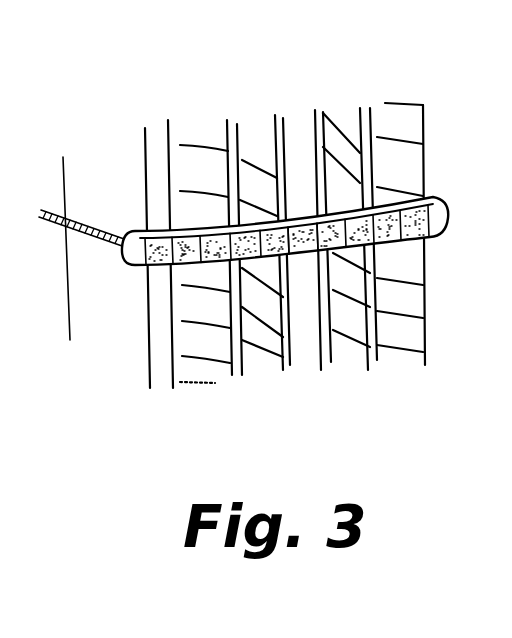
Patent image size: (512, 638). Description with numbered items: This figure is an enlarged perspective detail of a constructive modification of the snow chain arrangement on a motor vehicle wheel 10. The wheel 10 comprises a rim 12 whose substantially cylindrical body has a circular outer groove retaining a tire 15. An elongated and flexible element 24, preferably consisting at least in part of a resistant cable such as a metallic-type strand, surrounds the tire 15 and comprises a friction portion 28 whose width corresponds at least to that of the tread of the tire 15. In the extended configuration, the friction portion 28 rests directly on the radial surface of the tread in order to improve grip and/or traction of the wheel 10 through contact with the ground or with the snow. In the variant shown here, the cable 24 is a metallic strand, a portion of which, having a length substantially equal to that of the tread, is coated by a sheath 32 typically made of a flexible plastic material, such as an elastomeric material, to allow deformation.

The motor vehicle wheel 10 is at (439, 282).
The rim 12 is at (76, 311).
The tire 15 is at (253, 193).
The elongated and flexible element 24 is at (93, 222).
The friction portion 28 is at (340, 207).
The sheath 32 is at (303, 262).